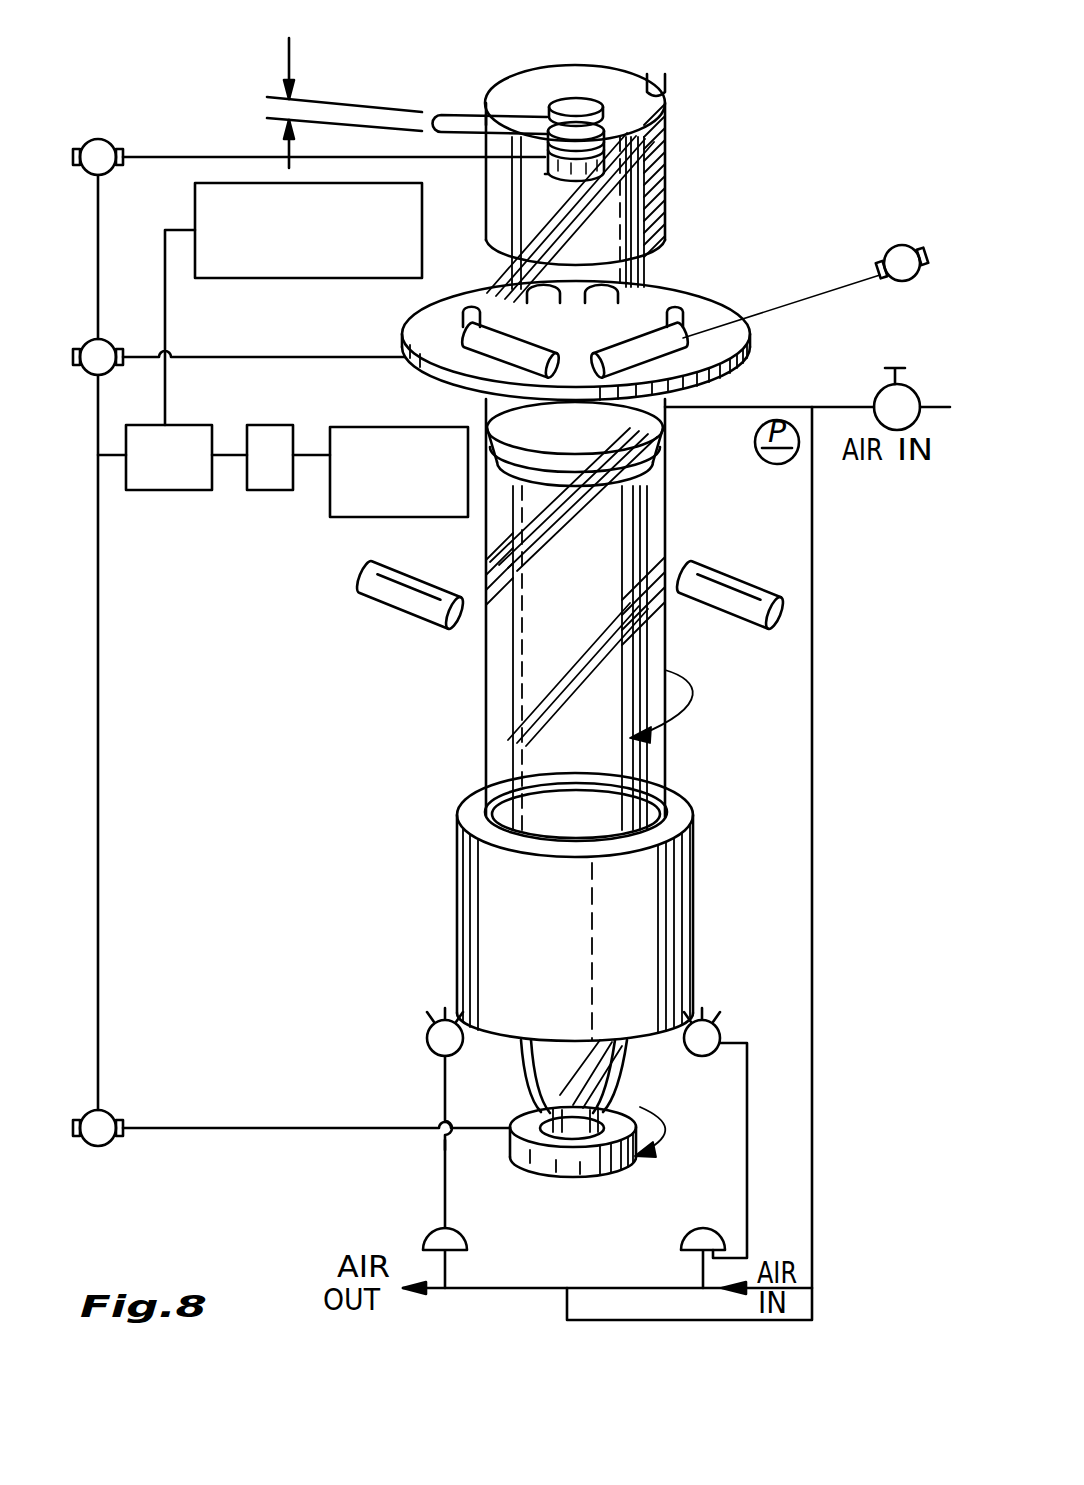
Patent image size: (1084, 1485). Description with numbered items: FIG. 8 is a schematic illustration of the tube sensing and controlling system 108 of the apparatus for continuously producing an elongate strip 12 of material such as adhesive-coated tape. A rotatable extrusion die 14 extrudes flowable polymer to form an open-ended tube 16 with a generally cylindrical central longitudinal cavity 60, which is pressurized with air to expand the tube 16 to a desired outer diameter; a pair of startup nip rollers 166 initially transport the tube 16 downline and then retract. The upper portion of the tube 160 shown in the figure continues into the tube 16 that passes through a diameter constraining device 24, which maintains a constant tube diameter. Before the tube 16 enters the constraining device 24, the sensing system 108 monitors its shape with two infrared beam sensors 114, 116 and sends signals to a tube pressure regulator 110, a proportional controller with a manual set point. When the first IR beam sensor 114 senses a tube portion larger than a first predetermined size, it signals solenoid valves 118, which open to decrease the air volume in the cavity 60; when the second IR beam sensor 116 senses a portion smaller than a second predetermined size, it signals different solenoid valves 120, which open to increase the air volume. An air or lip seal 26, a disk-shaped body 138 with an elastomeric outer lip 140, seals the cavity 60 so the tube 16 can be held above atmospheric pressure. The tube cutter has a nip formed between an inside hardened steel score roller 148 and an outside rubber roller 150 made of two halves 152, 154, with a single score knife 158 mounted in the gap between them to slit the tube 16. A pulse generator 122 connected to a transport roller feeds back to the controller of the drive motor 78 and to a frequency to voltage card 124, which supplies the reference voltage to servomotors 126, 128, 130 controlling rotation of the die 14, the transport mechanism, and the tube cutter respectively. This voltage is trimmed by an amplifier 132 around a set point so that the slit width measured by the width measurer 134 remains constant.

The strip 12 is at (450, 112).
The rotatable extrusion die 14 is at (563, 1174).
The tube 16 is at (485, 705).
The diameter constraining device 24 is at (495, 907).
The air or lip seal 26 is at (500, 470).
The central longitudinal cavity 60 is at (653, 72).
The drive motor 78 is at (897, 247).
The tube sensing and controlling system 108 is at (410, 1163).
The tube pressure regulator 110 is at (876, 393).
The first IR beam sensor 114 is at (426, 1060).
The second IR beam sensor 116 is at (702, 1057).
The solenoid valves 118 is at (466, 1236).
The solenoid valves 120 is at (690, 1232).
The pulse generator 122 is at (342, 519).
The frequency to voltage card 124 is at (263, 492).
The servomotor 126 is at (100, 1147).
The servomotor 128 is at (107, 339).
The servomotor 130 is at (115, 143).
The amplifier 132 is at (163, 492).
The width measurer 134 is at (292, 280).
The seal body 138 is at (652, 425).
The elastomeric outer lip 140 is at (655, 450).
The inside nip roller 148 is at (574, 98).
The outside nip roller 150 is at (602, 128).
The roller half 152 is at (560, 124).
The roller half 154 is at (547, 168).
The score knife 158 is at (563, 170).
The upper tube 160 is at (664, 217).
The startup nip rollers 166 is at (373, 580).